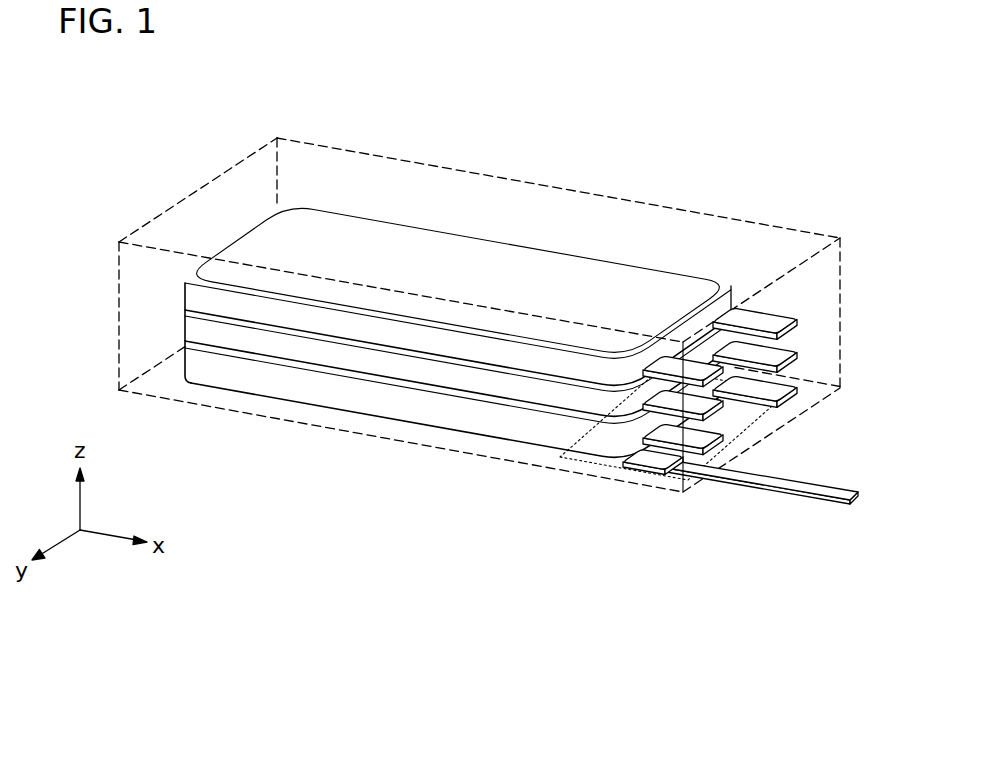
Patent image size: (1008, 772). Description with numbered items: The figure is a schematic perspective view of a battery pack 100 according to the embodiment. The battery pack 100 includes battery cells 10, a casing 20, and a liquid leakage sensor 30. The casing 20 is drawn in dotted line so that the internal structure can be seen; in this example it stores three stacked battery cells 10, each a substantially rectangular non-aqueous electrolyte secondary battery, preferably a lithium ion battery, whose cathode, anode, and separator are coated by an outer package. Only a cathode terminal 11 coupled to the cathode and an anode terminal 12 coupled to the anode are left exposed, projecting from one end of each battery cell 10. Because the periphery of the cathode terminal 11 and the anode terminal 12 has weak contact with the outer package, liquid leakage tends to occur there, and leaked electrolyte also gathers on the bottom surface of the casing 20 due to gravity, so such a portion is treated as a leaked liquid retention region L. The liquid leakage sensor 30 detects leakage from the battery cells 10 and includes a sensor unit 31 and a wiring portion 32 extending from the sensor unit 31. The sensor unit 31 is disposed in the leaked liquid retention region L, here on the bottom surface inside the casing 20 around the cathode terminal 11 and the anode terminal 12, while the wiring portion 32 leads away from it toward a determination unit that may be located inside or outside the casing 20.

The battery pack 100 is at (479, 316).
The battery cell 10 is at (479, 386).
The cathode terminal 11 is at (720, 368).
The anode terminal 12 is at (790, 393).
The casing 20 is at (758, 223).
The liquid leakage sensor 30 is at (740, 524).
The sensor unit 31 is at (637, 475).
The wiring portion 32 is at (823, 494).
The leaked liquid retention region L is at (590, 472).